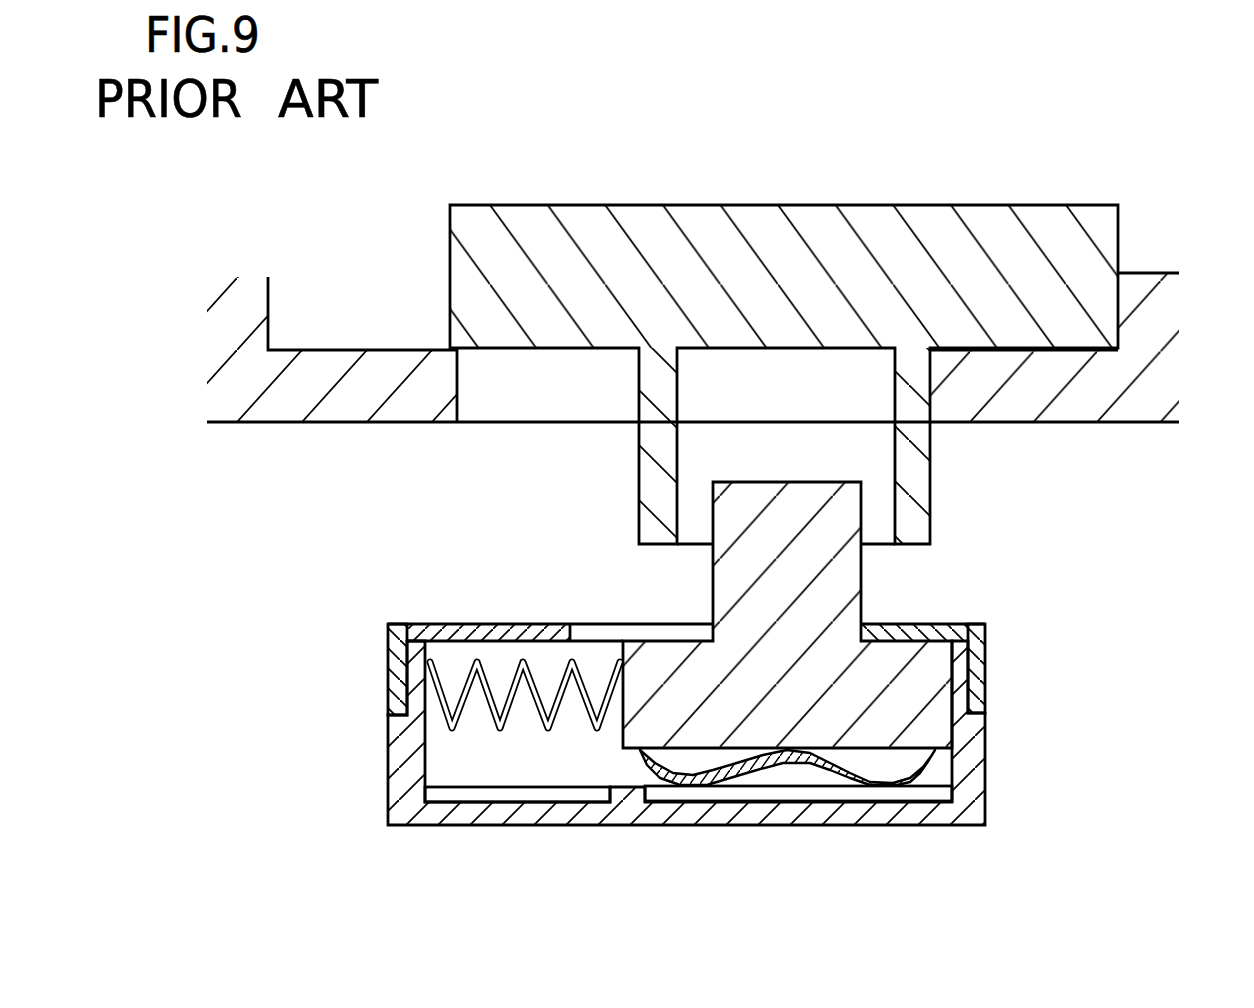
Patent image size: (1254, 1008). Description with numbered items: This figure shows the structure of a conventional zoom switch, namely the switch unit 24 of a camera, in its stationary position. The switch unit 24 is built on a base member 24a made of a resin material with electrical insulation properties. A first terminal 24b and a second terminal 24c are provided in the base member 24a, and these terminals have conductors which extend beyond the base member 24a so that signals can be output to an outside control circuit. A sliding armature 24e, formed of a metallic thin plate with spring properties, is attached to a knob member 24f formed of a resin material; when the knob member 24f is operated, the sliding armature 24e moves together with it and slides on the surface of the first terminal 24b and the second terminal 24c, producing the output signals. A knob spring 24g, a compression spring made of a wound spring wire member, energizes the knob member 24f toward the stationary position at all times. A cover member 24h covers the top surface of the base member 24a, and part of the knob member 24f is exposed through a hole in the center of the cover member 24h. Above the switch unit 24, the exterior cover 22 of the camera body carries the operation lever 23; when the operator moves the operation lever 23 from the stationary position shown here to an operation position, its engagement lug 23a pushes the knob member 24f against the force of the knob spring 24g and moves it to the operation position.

The exterior cover 22 is at (1165, 350).
The operation lever 23 is at (863, 222).
The engagement lug 23a is at (893, 408).
The switch unit 24 is at (379, 618).
The base member 24a is at (977, 778).
The first terminal 24b is at (774, 796).
The second terminal 24c is at (555, 793).
The sliding armature 24e is at (860, 772).
The knob member 24f is at (853, 574).
The knob spring 24g is at (500, 724).
The cover member 24h is at (405, 678).